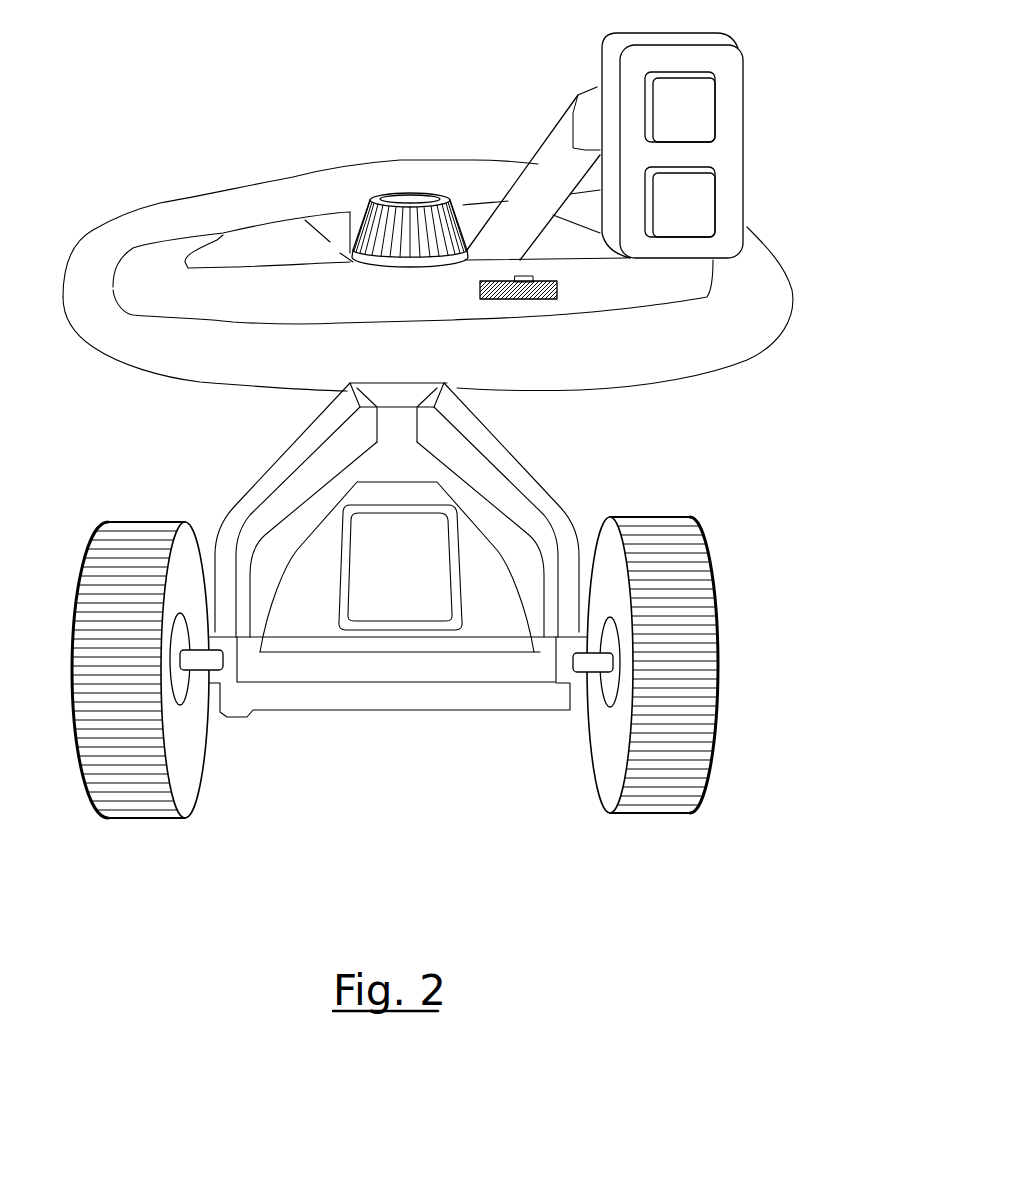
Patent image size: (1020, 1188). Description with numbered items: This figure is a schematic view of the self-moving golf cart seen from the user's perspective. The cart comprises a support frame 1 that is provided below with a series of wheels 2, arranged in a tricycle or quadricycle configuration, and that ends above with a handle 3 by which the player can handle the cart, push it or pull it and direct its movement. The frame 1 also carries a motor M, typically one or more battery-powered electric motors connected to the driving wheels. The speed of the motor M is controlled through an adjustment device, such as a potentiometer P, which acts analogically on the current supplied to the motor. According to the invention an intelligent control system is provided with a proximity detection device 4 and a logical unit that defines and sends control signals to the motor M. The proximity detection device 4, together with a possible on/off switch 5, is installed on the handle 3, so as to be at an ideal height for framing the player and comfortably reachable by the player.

The support frame 1 is at (397, 550).
The wheels 2 is at (715, 506).
The handle 3 is at (690, 352).
The proximity detection device 4 is at (728, 97).
The on/off switch 5 is at (547, 292).
The potentiometer P is at (410, 195).
The motor M is at (352, 570).